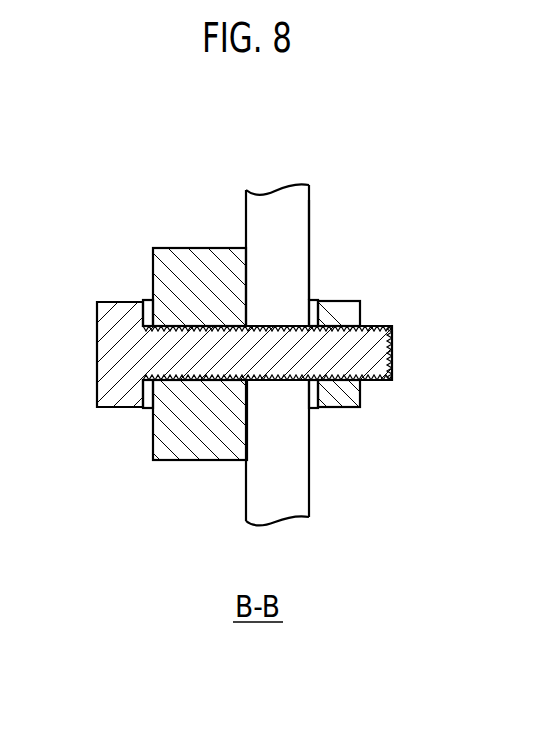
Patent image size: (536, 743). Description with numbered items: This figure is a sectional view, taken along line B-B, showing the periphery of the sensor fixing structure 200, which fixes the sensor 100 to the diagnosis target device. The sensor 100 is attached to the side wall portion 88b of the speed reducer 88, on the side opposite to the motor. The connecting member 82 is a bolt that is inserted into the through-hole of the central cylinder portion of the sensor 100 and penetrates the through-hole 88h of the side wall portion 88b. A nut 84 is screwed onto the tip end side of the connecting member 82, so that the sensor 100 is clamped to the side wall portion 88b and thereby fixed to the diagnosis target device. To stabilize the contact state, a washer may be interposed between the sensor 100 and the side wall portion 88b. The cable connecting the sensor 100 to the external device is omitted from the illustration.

The sensor fixing structure 200 is at (468, 132).
The speed reducer 88 is at (297, 215).
The side wall portion 88b is at (297, 267).
The through-hole 88h is at (323, 387).
The connecting member 82 is at (110, 372).
The nut 84 is at (345, 395).
The sensor 100 is at (203, 250).